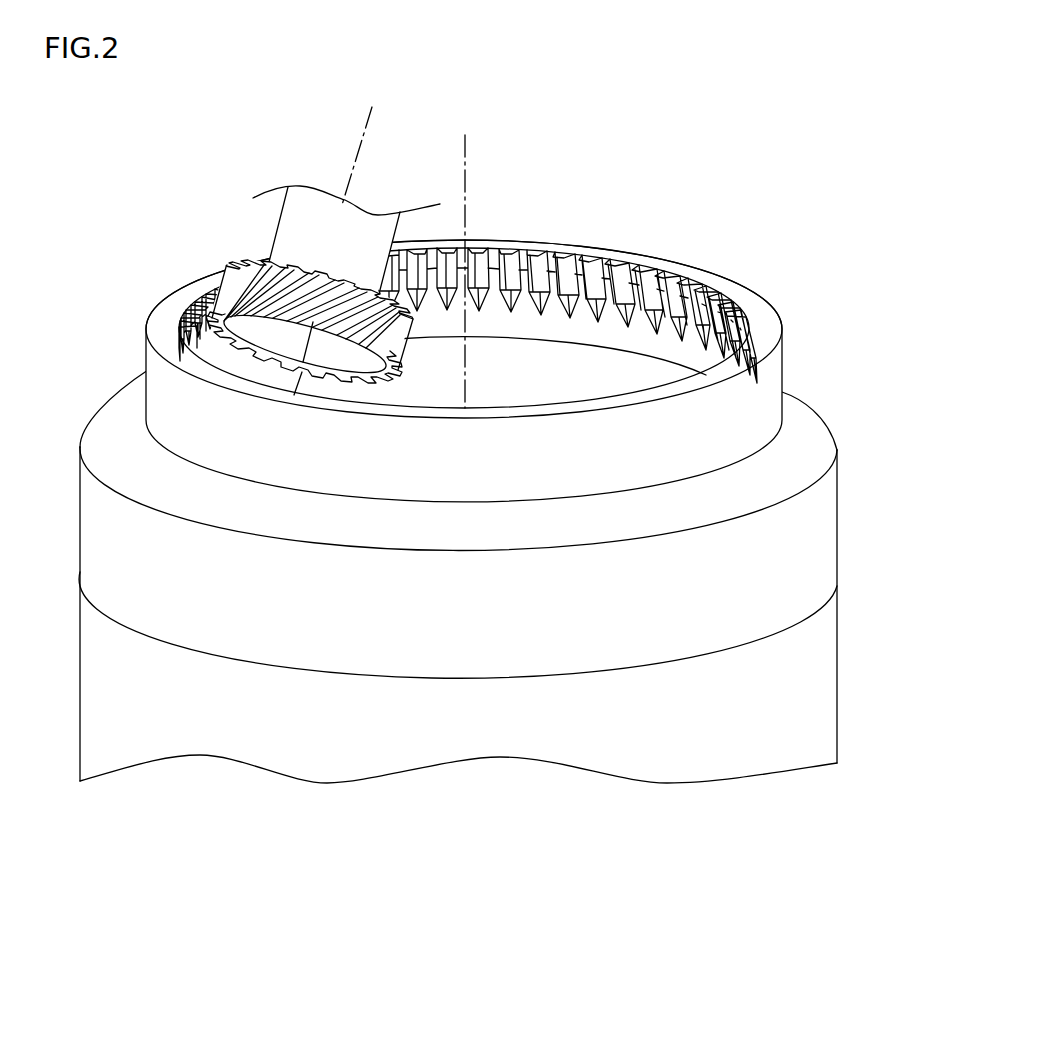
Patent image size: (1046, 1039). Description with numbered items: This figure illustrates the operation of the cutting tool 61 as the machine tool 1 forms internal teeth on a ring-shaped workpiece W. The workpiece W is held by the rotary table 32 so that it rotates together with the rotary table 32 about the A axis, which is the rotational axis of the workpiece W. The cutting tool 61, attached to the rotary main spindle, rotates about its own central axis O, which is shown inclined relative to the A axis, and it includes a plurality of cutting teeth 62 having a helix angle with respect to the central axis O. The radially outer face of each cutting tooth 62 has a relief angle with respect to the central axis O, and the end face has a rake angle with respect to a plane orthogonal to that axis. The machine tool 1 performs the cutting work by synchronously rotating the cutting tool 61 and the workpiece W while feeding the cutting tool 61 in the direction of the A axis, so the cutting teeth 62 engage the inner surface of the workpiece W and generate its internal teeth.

The machine tool 1 is at (746, 124).
The rotary table 32 is at (662, 748).
The cutting tool 61 is at (280, 234).
The cutting teeth 62 is at (228, 290).
The workpiece W is at (766, 307).
The central axis O is at (362, 138).
The A axis A is at (465, 150).